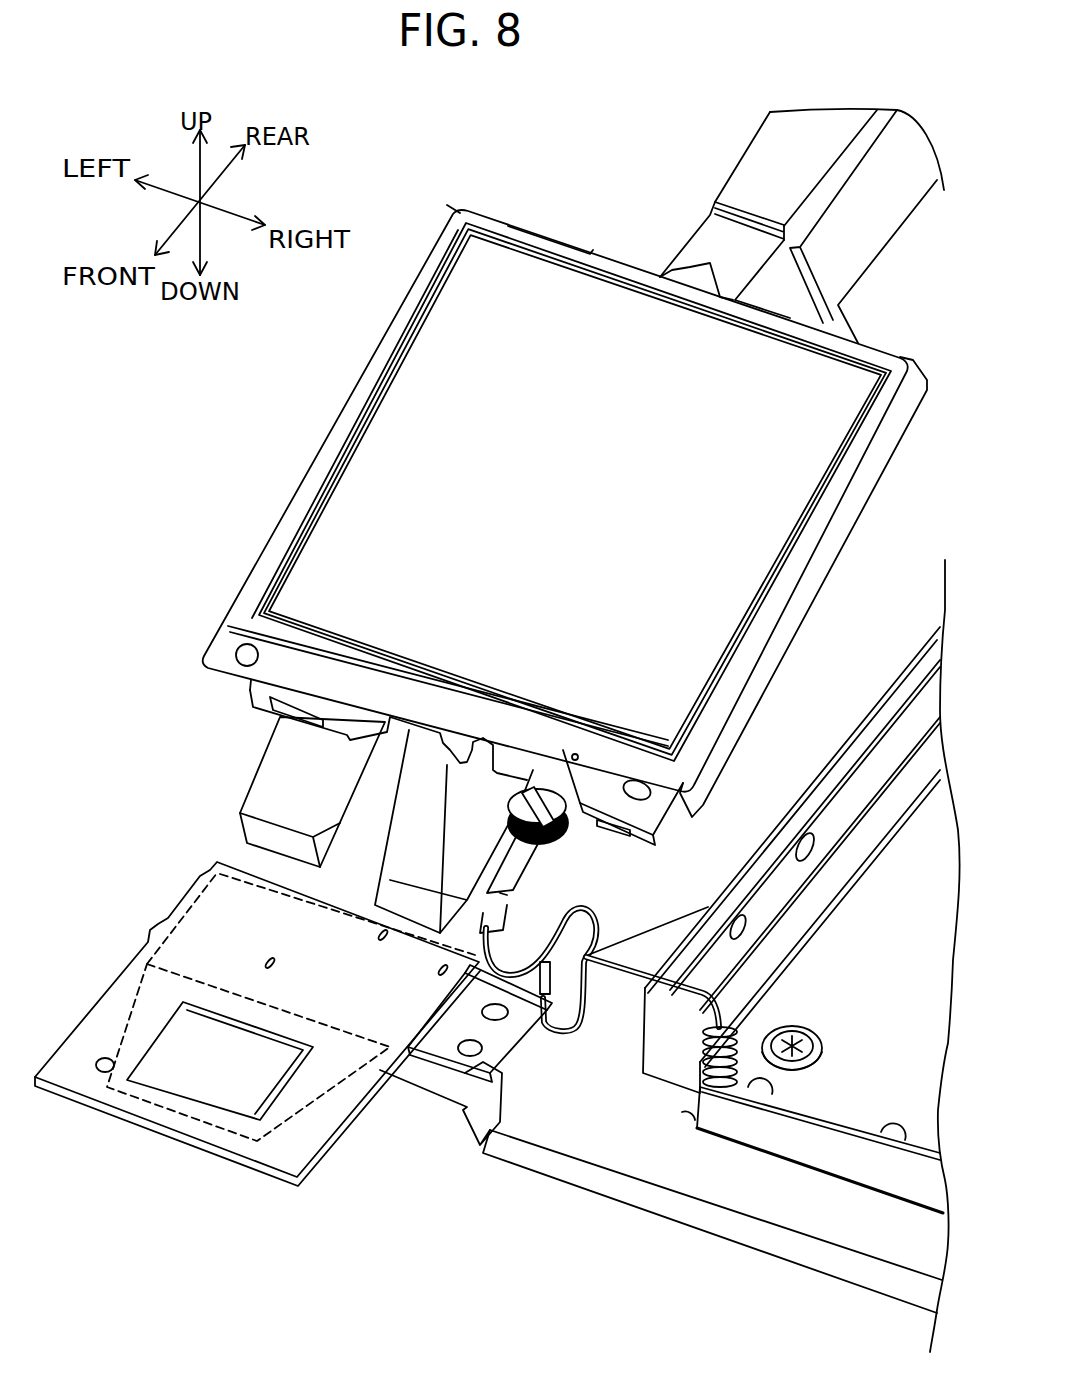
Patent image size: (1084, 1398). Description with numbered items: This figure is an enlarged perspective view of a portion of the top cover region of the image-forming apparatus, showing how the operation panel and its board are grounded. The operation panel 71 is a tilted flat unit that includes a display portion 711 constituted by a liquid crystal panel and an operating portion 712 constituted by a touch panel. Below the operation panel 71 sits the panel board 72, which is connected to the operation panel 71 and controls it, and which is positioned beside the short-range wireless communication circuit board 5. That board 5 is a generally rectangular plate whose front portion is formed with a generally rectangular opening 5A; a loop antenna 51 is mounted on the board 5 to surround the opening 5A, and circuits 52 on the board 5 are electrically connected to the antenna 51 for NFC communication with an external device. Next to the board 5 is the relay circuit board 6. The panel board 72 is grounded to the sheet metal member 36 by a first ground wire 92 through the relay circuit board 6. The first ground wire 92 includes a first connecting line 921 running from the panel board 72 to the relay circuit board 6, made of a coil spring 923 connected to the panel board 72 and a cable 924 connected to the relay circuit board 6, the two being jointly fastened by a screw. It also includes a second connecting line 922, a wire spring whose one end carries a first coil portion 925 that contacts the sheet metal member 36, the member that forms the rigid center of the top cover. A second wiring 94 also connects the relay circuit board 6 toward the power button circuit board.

The operation panel 71 is at (565, 511).
The display portion 711 is at (552, 492).
The operating portion 712 is at (398, 426).
The panel board 72 is at (592, 762).
The short-range wireless communication circuit board 5 is at (257, 1006).
The antenna 51 is at (163, 1005).
The circuits 52 is at (213, 858).
The opening 5A is at (193, 1087).
The relay circuit board 6 is at (520, 1057).
The first ground wire 92 is at (602, 960).
The first connecting line 921 is at (546, 858).
The second connecting line 922 is at (623, 977).
The coil spring 923 is at (520, 800).
The cable 924 is at (586, 908).
The first coil portion 925 is at (740, 1027).
The sheet metal member 36 is at (815, 1147).
The second wiring 94 is at (690, 1212).